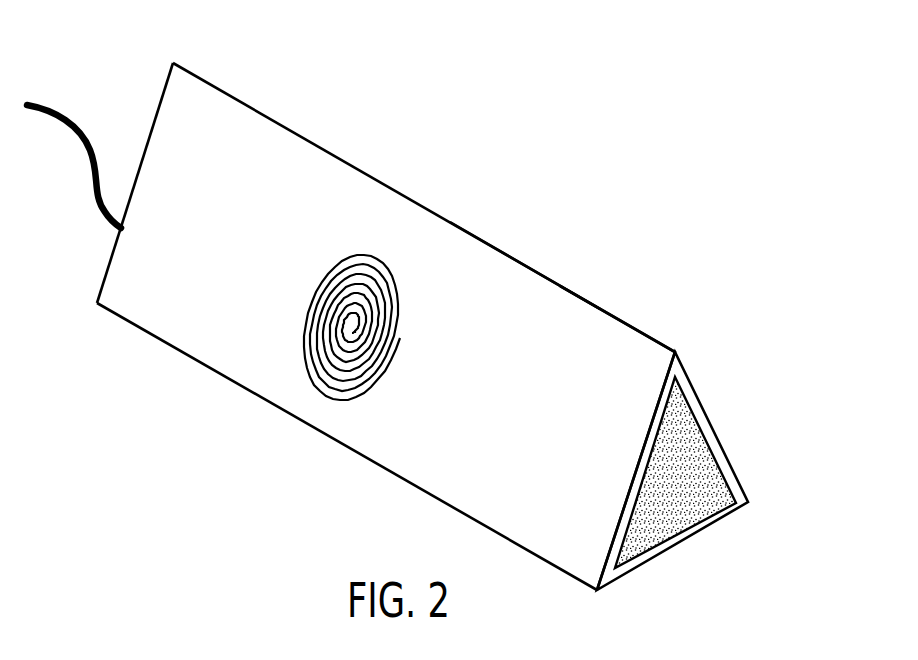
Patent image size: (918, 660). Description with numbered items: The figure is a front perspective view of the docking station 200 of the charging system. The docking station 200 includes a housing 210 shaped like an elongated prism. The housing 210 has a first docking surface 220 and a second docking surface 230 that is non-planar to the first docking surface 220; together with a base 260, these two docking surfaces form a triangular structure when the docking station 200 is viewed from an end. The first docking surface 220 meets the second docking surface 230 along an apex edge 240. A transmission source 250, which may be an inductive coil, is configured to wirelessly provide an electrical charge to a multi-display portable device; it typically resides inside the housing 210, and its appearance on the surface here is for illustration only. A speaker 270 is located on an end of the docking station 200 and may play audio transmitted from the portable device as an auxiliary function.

The docking station 200 is at (104, 310).
The housing 210 is at (613, 319).
The first docking surface 220 is at (529, 271).
The second docking surface 230 is at (697, 391).
The apex edge 240 is at (317, 146).
The transmission source 250 is at (333, 404).
The base 260 is at (398, 478).
The speaker 270 is at (709, 454).